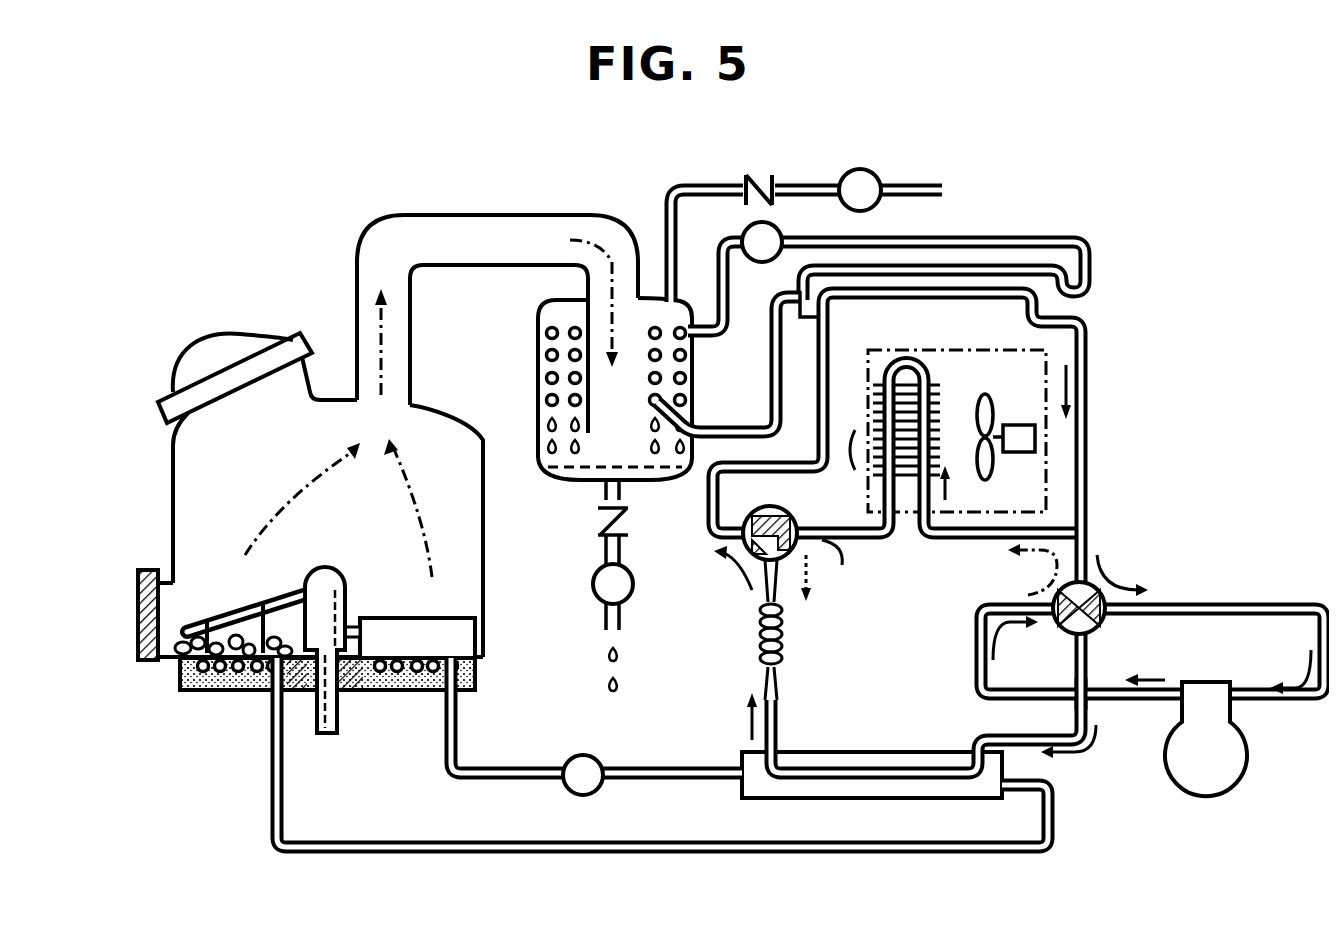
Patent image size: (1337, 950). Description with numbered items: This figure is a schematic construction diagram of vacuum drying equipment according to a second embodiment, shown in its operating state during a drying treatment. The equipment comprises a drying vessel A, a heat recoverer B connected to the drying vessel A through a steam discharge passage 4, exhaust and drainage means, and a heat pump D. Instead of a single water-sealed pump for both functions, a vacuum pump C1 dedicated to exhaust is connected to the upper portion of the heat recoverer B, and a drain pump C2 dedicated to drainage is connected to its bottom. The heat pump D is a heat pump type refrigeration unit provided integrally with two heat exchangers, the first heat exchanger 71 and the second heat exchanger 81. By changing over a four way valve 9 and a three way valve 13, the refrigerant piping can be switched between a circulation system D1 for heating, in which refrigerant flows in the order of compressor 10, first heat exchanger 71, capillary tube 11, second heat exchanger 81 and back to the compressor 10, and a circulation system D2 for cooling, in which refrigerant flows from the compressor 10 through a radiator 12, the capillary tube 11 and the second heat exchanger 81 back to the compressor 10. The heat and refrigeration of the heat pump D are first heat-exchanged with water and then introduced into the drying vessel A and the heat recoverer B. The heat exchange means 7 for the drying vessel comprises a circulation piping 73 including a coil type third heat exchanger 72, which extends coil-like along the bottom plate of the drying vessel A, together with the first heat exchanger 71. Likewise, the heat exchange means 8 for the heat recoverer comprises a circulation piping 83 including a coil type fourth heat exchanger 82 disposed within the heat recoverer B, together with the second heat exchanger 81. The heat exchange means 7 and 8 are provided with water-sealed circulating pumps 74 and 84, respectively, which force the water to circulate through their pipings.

The drying vessel A is at (168, 503).
The steam discharge passage 4 is at (497, 214).
The heat recoverer B is at (526, 375).
The vacuum pump C1 is at (880, 182).
The drain pump C2 is at (596, 590).
The heat exchange means for the heat recoverer 8 is at (978, 236).
The second heat exchanger 81 is at (811, 313).
The fourth heat exchanger 82 is at (686, 378).
The circulation piping 83 is at (1068, 238).
The circulating pump 84 is at (742, 236).
The heat pump D is at (1097, 491).
The circulation system for heating D1 is at (745, 722).
The circulation system for cooling D2 is at (820, 550).
The radiator 12 is at (1046, 437).
The three way valve 13 is at (789, 520).
The capillary tube 11 is at (786, 635).
The four way valve 9 is at (1152, 646).
The compressor 10 is at (1245, 757).
The heat exchange means for the drying vessel 7 is at (655, 868).
The first heat exchanger 71 is at (868, 756).
The third heat exchanger 72 is at (415, 690).
The circulation piping 73 is at (519, 768).
The circulating pump 74 is at (598, 768).